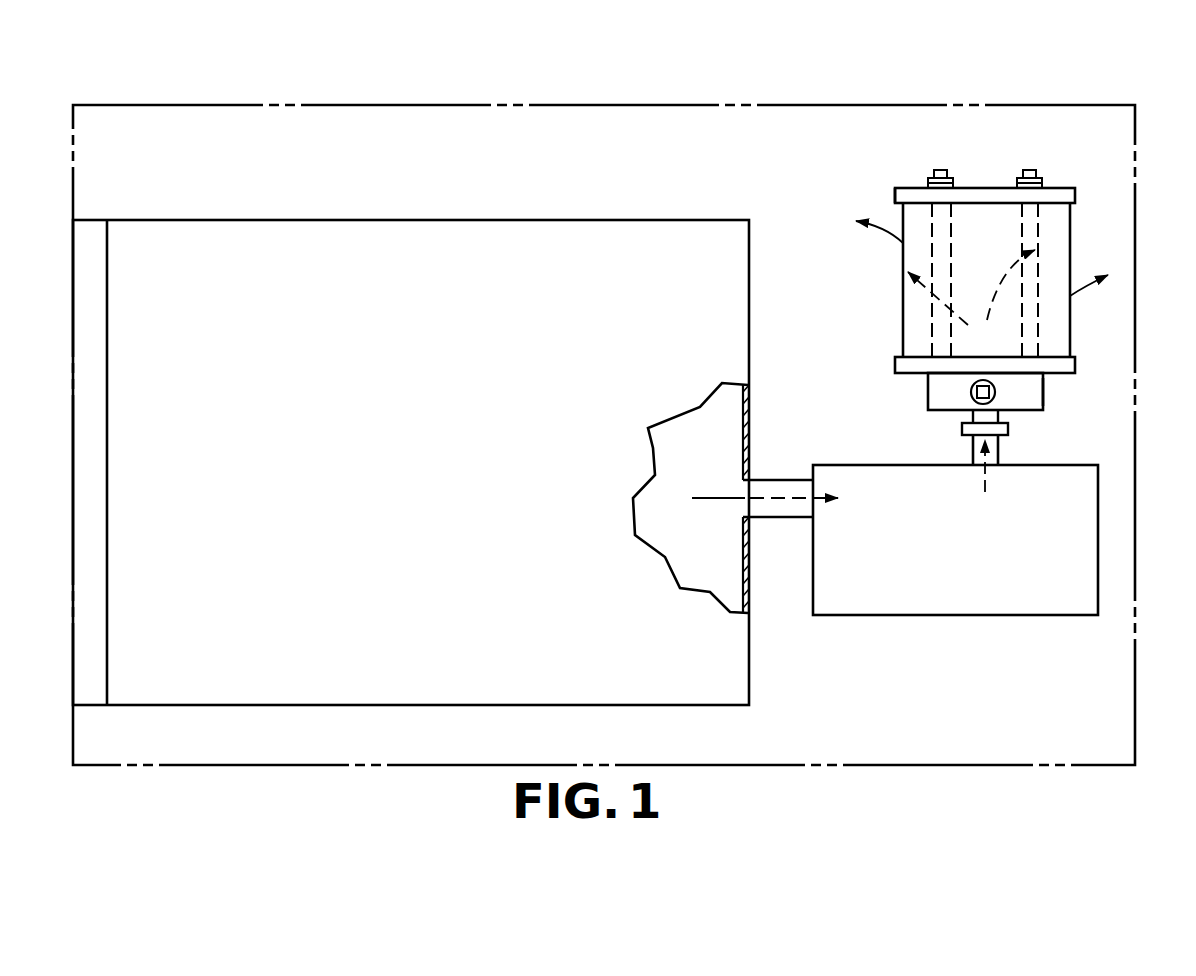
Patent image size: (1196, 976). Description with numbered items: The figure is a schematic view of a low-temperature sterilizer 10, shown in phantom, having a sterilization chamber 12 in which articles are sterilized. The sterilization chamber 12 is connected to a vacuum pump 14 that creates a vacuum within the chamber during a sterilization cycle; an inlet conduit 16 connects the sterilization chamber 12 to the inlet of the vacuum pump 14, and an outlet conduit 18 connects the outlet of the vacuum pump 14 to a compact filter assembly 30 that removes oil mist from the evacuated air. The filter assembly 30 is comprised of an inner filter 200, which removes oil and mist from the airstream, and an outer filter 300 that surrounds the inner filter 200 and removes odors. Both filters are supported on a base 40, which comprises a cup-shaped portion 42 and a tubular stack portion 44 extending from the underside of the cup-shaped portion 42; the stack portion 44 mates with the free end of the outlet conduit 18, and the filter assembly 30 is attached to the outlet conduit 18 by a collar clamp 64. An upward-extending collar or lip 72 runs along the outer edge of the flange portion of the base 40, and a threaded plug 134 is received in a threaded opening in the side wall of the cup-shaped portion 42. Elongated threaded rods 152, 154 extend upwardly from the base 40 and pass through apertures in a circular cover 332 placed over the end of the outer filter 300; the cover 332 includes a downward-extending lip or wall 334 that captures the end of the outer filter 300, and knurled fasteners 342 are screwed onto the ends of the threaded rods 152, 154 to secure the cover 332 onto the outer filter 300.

The low-temperature sterilizer 10 is at (648, 102).
The sterilization chamber 12 is at (436, 220).
The vacuum pump 14 is at (965, 598).
The inlet conduit 16 is at (778, 518).
The outlet conduit 18 is at (999, 450).
The compact filter assembly 30 is at (1075, 232).
The base 40 is at (1050, 403).
The cup-shaped portion 42 is at (1047, 387).
The tubular stack portion 44 is at (975, 413).
The collar clamp 64 is at (962, 429).
The collar or lip 72 is at (897, 365).
The threaded plug 134 is at (970, 392).
The threaded rod 152 is at (940, 168).
The threaded rod 154 is at (1032, 168).
The inner filter 200 is at (953, 249).
The outer filter 300 is at (901, 303).
The cover 332 is at (1058, 186).
The downward-extending lip or wall 334 is at (897, 196).
The knurled fasteners 342 is at (930, 177).